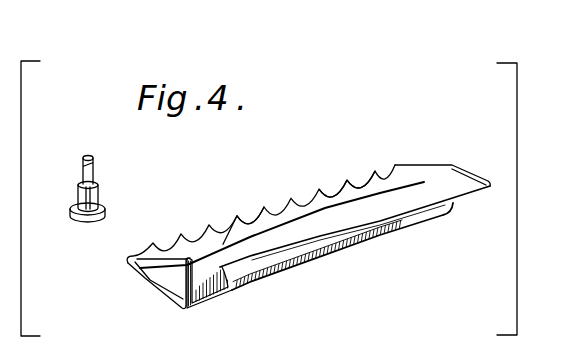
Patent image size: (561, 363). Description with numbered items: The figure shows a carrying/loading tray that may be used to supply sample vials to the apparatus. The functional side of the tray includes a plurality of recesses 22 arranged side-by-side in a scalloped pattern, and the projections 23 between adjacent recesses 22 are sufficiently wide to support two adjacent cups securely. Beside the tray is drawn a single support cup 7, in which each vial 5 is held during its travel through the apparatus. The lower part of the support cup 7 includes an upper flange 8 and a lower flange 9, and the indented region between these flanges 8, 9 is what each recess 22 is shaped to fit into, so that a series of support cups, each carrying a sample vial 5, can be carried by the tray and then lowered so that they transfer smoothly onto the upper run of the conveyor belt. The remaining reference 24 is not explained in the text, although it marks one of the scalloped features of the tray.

The vial 5 is at (96, 172).
The support cup 7 is at (79, 196).
The upper flange 8 is at (102, 198).
The lower flange 9 is at (88, 220).
The recess 22 is at (240, 286).
The projection 23 is at (358, 176).
The notch 24 is at (262, 205).